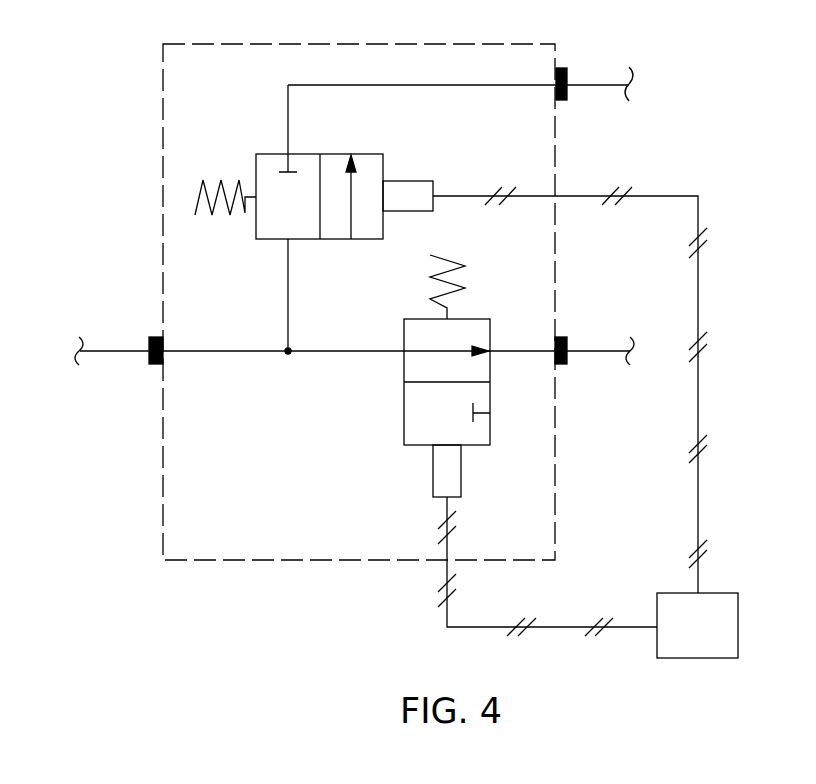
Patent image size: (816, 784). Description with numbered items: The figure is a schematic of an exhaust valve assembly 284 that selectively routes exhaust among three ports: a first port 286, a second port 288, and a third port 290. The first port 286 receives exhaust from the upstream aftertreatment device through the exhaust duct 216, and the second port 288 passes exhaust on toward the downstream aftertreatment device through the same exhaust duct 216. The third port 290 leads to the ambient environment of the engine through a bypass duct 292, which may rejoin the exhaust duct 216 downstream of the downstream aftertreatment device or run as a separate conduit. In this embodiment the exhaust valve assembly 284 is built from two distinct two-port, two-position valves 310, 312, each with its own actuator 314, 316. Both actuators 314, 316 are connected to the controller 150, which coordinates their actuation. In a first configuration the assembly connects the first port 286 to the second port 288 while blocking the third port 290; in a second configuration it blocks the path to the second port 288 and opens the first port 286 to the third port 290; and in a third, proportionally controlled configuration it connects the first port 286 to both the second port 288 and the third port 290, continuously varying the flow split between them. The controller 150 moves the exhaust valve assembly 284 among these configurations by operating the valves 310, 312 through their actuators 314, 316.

The controller 150 is at (712, 638).
The exhaust duct 216 is at (225, 353).
The exhaust valve assembly 284 is at (270, 562).
The first port 286 is at (157, 337).
The second port 288 is at (562, 334).
The third port 290 is at (560, 68).
The bypass duct 292 is at (498, 87).
The two-port, two-position valve 310 is at (263, 247).
The two-port, two-position valve 312 is at (404, 421).
The actuator 314 is at (405, 181).
The actuator 316 is at (462, 469).